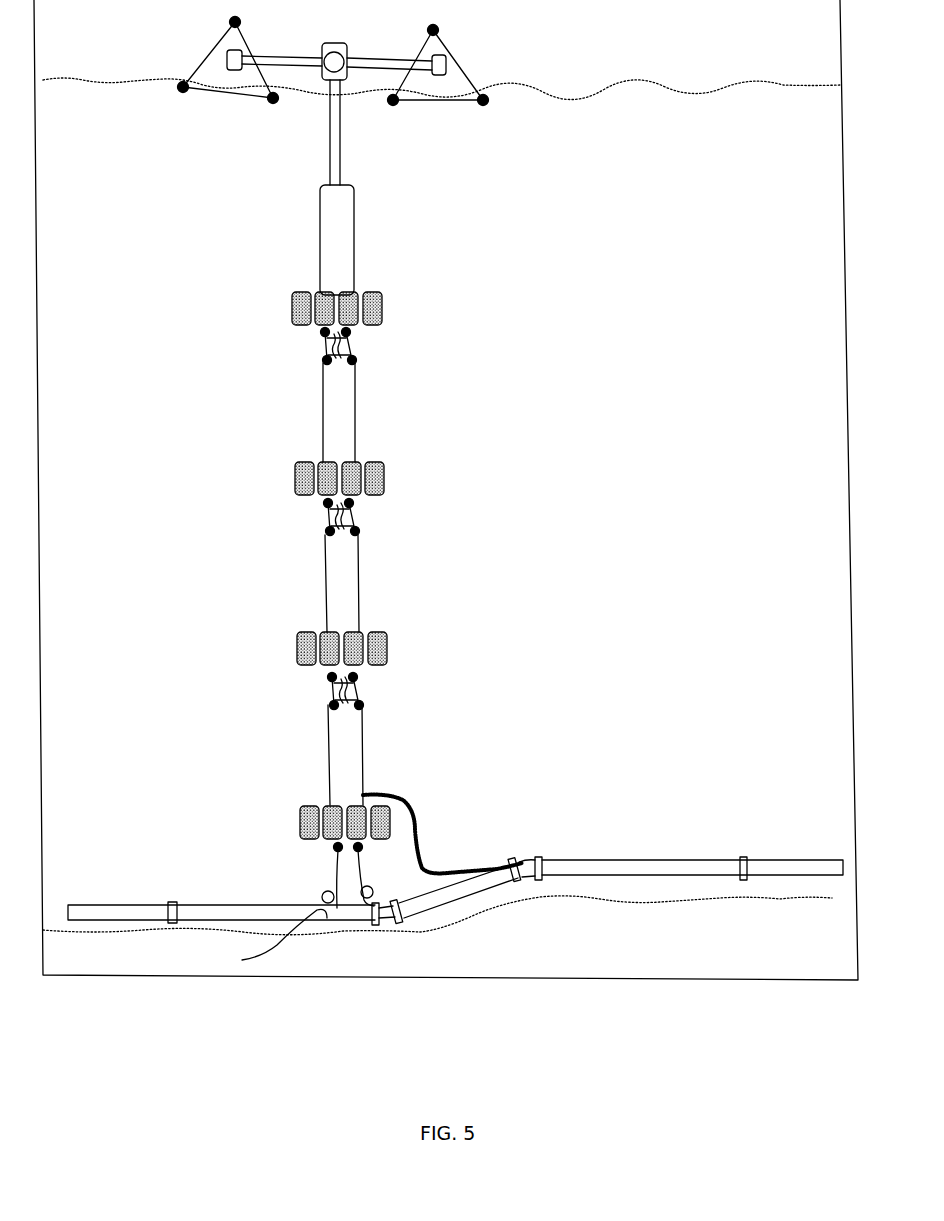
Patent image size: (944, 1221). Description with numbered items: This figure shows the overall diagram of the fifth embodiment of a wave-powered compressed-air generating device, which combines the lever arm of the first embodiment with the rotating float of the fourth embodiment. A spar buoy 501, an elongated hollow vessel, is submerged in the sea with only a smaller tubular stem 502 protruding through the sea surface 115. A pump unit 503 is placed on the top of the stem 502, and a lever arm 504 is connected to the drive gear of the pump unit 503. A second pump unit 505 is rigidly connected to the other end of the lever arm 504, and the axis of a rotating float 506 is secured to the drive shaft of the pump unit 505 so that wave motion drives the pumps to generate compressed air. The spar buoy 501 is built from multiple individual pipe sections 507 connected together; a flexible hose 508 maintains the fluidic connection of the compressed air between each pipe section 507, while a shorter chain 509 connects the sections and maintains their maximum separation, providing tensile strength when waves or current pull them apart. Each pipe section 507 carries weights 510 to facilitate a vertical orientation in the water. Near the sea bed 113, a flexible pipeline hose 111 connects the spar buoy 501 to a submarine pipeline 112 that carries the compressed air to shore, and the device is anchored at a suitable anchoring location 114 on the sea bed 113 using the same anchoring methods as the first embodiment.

The pipeline hose 111 is at (407, 827).
The submarine pipeline 112 is at (640, 860).
The sea bed 113 is at (437, 915).
The anchoring location 114 is at (400, 905).
The sea surface 115 is at (441, 95).
The spar buoy 501 is at (322, 495).
The stem 502 is at (328, 169).
The pump unit 503 is at (318, 77).
The lever arm 504 is at (377, 70).
The pump unit 505 is at (439, 75).
The rotating float 506 is at (468, 78).
The pipe section 507 is at (355, 405).
The flexible hose 508 is at (324, 517).
The chain 509 is at (360, 522).
The weights 510 is at (297, 648).